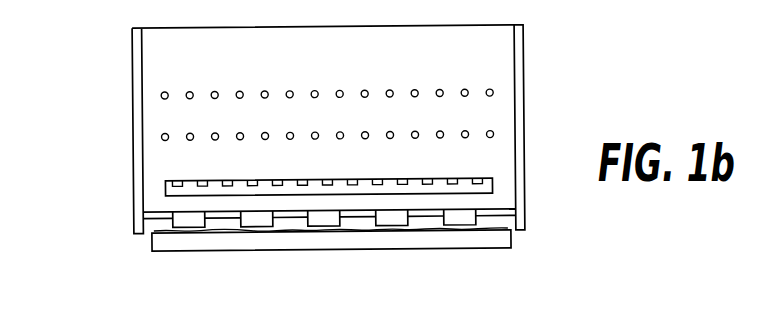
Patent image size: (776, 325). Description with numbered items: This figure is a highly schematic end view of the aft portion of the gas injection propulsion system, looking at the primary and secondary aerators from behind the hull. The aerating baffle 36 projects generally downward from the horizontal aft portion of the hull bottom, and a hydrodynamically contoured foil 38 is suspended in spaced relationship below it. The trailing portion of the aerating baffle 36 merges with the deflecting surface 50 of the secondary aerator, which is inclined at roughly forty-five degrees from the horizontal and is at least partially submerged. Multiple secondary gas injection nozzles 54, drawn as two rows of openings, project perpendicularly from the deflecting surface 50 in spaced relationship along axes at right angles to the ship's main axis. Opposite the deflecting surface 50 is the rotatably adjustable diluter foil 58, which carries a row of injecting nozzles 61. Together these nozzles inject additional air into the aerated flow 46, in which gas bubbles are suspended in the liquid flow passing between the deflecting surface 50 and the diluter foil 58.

The aerating baffle 36 is at (157, 216).
The hydrodynamically contoured foil 38 is at (325, 239).
The aerated flow 46 is at (418, 229).
The deflecting surface 50 is at (156, 164).
The secondary gas injection nozzles 54 is at (161, 97).
The diluter foil 58 is at (474, 168).
The injecting nozzles 61 is at (489, 177).